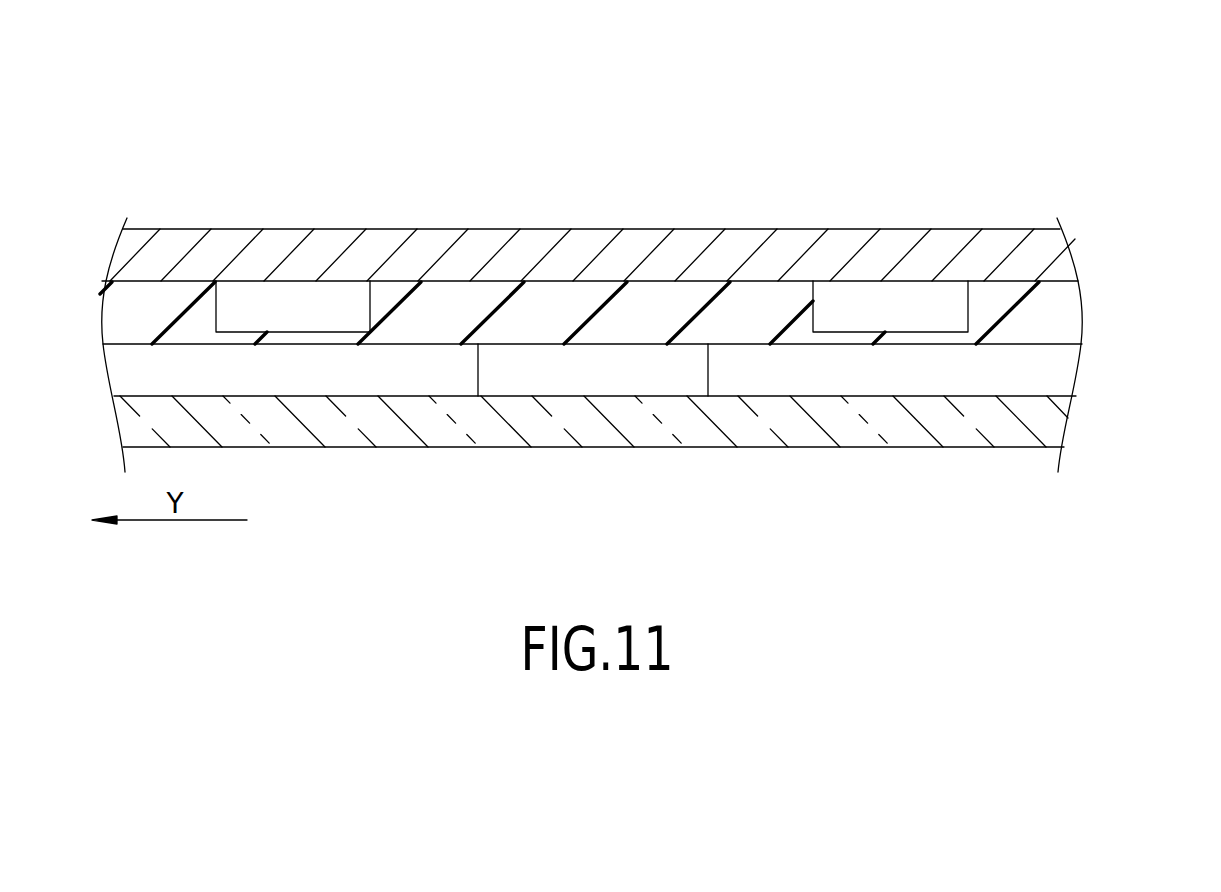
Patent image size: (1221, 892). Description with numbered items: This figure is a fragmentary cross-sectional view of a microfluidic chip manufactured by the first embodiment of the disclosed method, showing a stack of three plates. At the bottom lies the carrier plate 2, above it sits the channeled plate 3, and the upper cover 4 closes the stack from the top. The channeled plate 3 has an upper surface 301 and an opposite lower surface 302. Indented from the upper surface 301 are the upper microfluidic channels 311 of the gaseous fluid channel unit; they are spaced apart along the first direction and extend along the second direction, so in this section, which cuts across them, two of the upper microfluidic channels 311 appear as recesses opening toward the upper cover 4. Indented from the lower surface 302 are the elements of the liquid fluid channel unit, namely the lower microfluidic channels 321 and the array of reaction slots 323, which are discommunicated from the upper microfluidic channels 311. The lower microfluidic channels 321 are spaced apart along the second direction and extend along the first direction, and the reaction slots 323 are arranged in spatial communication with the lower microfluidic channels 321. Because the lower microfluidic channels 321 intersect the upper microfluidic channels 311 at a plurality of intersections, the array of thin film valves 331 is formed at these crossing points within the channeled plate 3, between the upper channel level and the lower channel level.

The carrier plate 2 is at (1078, 432).
The channeled plate 3 is at (1094, 315).
The upper cover 4 is at (1078, 234).
The upper surface 301 is at (1057, 281).
The lower surface 302 is at (1018, 396).
The upper microfluidic channels 311 is at (592, 201).
The lower microfluidic channels 321 is at (407, 382).
The reaction slots 323 is at (555, 373).
The thin film valves 331 is at (293, 358).